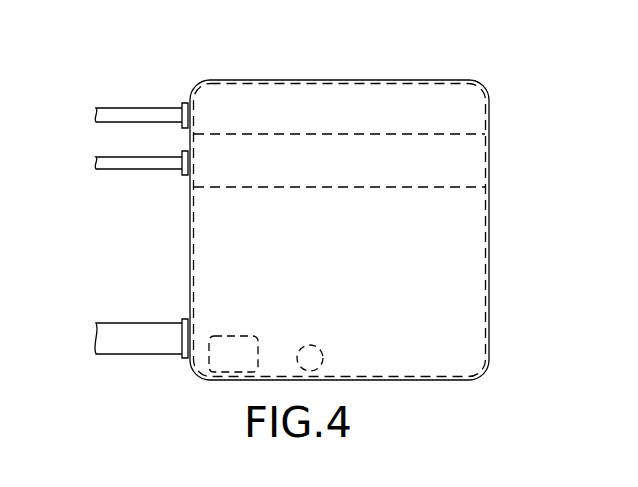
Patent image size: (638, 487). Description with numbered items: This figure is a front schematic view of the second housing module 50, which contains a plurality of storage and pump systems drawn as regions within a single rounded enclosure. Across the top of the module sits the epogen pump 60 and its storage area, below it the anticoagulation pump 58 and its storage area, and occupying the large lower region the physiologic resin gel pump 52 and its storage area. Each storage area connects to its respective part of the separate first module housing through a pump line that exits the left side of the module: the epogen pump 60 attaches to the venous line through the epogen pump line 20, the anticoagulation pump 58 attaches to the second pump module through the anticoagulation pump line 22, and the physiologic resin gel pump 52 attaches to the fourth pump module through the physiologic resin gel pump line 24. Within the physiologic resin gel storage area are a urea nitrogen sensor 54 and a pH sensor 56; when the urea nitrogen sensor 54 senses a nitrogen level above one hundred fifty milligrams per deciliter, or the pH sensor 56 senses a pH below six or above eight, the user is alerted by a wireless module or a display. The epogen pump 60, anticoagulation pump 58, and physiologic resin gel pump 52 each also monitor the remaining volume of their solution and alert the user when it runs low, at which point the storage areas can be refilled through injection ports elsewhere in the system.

The epogen pump line 20 is at (104, 108).
The anticoagulation pump line 22 is at (104, 169).
The physiologic resin gel pump line 24 is at (105, 354).
The second housing module 50 is at (400, 80).
The physiologic resin gel pump 52 is at (413, 383).
The urea nitrogen sensor 54 is at (226, 334).
The pH sensor 56 is at (305, 344).
The anticoagulation pump 58 is at (450, 190).
The epogen pump 60 is at (313, 80).